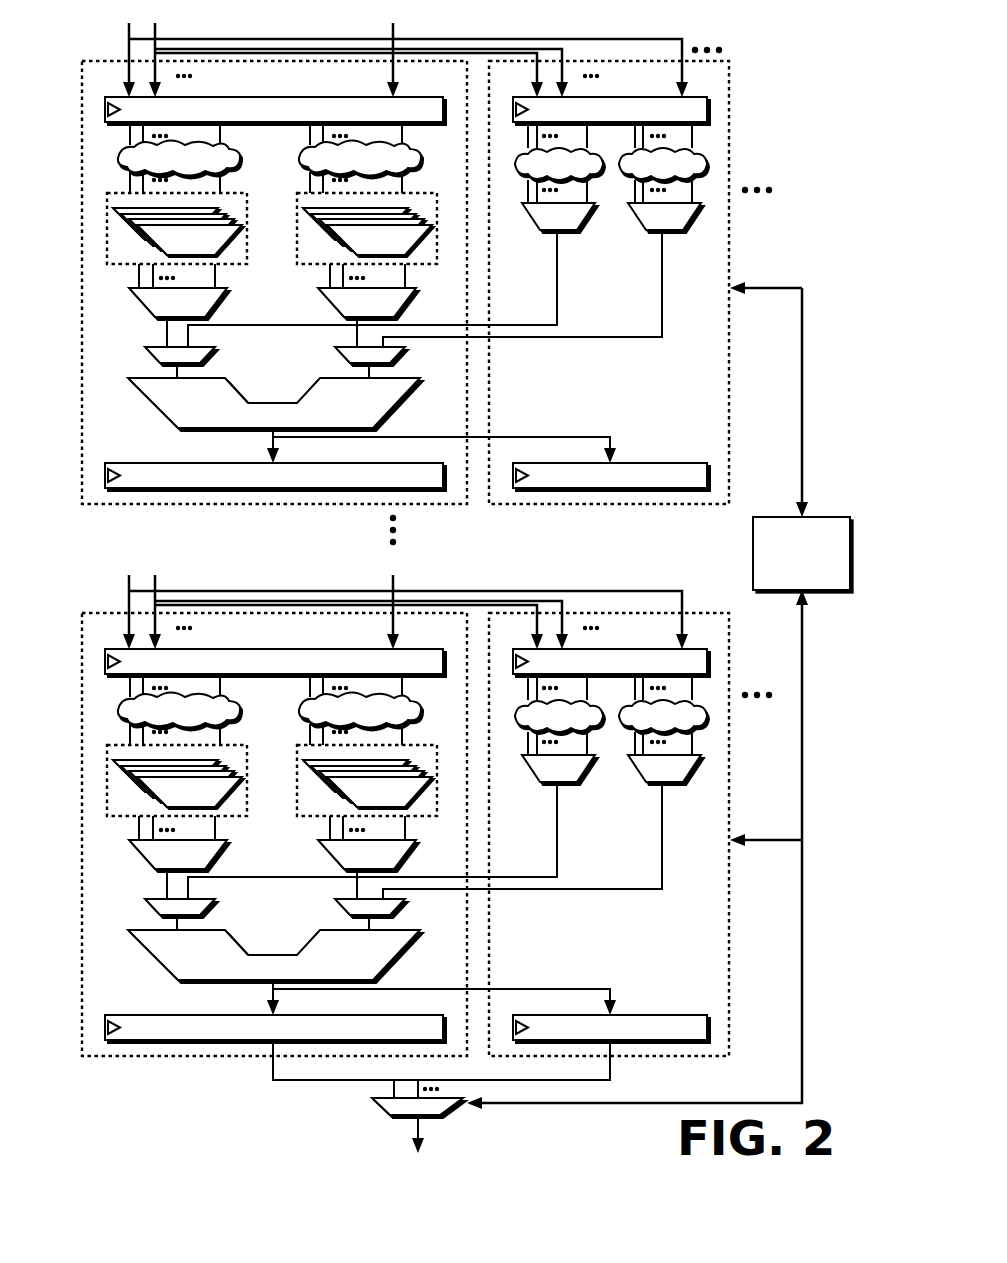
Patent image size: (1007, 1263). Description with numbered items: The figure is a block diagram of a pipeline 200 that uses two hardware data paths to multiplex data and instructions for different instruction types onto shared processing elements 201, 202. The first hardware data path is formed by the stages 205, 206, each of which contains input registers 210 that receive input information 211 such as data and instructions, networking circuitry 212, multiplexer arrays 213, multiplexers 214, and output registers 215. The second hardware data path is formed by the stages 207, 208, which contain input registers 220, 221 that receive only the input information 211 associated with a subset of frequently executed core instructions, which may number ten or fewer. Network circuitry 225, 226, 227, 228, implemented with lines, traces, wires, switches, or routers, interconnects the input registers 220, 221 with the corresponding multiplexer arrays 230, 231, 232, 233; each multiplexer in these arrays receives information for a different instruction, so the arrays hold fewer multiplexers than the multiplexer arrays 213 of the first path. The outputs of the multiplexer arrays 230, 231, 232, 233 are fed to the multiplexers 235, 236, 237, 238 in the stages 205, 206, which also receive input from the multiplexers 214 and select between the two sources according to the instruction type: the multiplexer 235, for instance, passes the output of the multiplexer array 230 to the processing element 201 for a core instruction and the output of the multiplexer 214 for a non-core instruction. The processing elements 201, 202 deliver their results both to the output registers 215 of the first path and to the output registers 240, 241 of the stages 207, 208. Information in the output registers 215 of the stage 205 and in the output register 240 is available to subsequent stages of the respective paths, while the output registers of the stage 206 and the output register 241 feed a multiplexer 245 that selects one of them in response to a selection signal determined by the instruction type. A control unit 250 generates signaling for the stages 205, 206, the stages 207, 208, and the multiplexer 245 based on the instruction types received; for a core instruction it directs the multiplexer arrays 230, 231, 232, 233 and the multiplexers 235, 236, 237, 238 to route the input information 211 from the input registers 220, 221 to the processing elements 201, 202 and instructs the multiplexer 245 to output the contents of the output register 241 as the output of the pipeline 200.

The pipeline 200 is at (790, 44).
The processing element 201 is at (275, 404).
The processing element 202 is at (275, 956).
The stage 205 is at (153, 505).
The stage 206 is at (153, 1057).
The stage 207 is at (612, 505).
The stage 208 is at (658, 1057).
The input register 210 is at (105, 108).
The input information 211 is at (104, 47).
The networking circuitry 212 is at (180, 160).
The multiplexer array 213 is at (107, 208).
The multiplexer 214 is at (179, 304).
The output register 215 is at (105, 475).
The input register 220 is at (708, 108).
The input register 221 is at (708, 660).
The network circuitry 225 is at (560, 165).
The network circuitry 226 is at (664, 165).
The network circuitry 227 is at (560, 717).
The network circuitry 228 is at (664, 717).
The multiplexer array 230 is at (560, 218).
The multiplexer array 231 is at (666, 218).
The multiplexer array 232 is at (560, 770).
The multiplexer array 233 is at (666, 770).
The multiplexer 235 is at (152, 353).
The multiplexer 236 is at (345, 353).
The multiplexer 237 is at (152, 905).
The multiplexer 238 is at (345, 905).
The output register 240 is at (633, 460).
The output register 241 is at (633, 1012).
The multiplexer 245 is at (437, 1118).
The control unit 250 is at (660, 695).